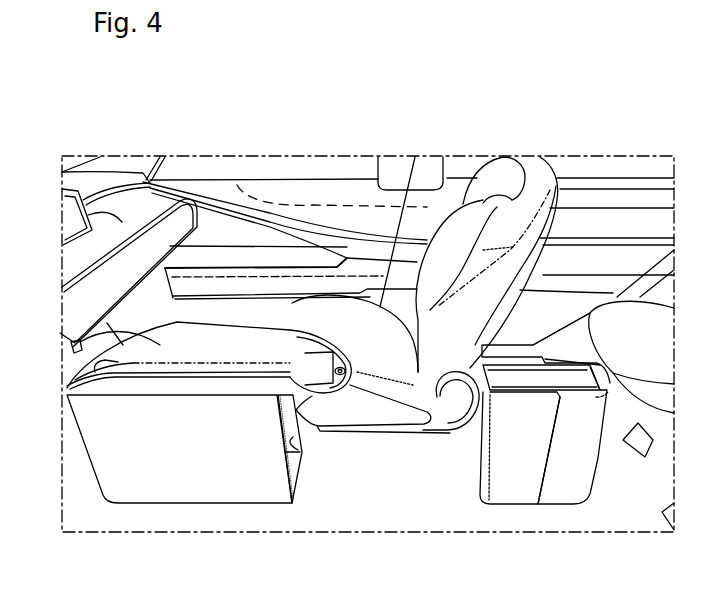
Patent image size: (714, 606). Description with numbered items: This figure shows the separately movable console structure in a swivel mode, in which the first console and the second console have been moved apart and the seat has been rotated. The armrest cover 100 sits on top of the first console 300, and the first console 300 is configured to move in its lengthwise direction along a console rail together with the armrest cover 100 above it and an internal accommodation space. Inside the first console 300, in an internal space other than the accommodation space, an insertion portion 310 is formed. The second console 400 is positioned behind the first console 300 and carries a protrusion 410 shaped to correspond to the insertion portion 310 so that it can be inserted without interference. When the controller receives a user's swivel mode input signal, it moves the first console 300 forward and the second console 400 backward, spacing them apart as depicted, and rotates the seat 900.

The armrest cover 100 is at (72, 343).
The first console 300 is at (193, 462).
The insertion portion 310 is at (298, 413).
The second console 400 is at (565, 492).
The protrusion 410 is at (510, 485).
The seat 900 is at (507, 190).